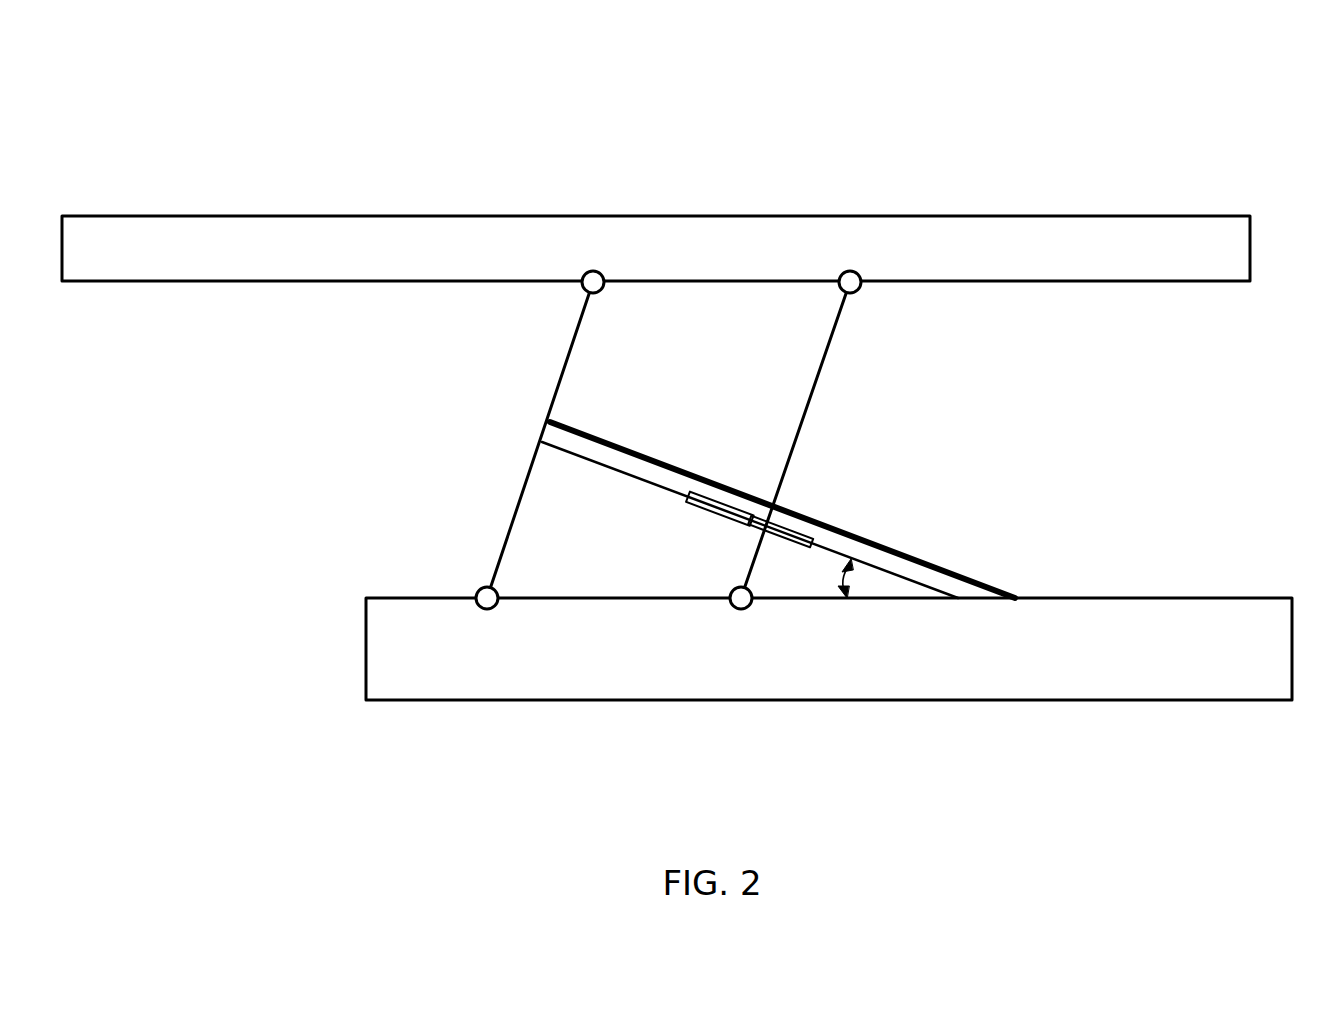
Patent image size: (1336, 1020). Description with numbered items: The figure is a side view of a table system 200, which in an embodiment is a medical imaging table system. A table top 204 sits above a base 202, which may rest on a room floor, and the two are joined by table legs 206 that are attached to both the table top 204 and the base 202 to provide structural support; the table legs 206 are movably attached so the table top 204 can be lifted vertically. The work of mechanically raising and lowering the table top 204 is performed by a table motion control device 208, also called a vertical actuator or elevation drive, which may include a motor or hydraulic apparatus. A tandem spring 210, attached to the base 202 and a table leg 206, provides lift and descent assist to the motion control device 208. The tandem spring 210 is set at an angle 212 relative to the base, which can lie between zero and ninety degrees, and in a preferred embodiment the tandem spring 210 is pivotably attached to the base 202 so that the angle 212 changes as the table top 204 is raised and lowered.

The table system 200 is at (1195, 92).
The base 202 is at (1220, 606).
The table top 204 is at (993, 222).
The table leg 206 is at (505, 540).
The table motion control device 208 is at (888, 543).
The tandem spring 210 is at (596, 463).
The angle 212 is at (838, 578).